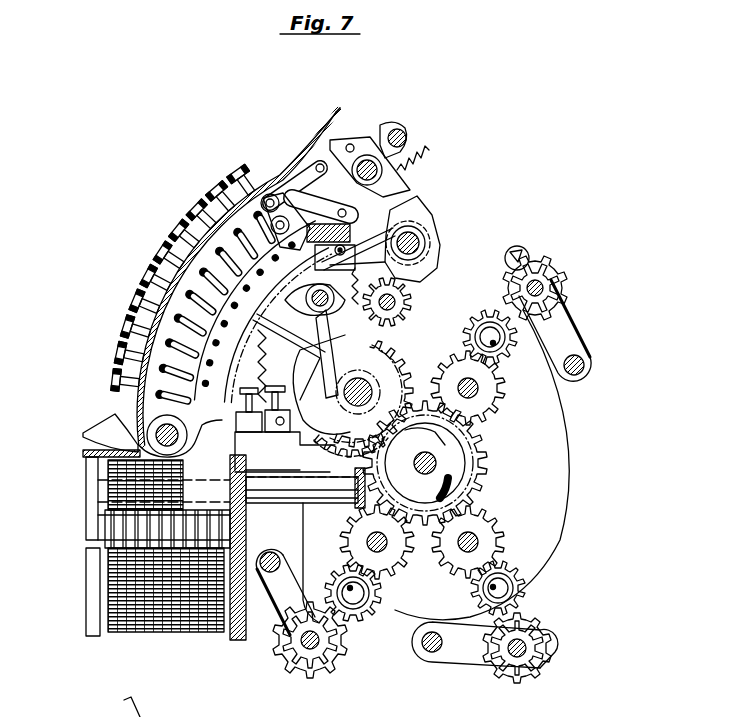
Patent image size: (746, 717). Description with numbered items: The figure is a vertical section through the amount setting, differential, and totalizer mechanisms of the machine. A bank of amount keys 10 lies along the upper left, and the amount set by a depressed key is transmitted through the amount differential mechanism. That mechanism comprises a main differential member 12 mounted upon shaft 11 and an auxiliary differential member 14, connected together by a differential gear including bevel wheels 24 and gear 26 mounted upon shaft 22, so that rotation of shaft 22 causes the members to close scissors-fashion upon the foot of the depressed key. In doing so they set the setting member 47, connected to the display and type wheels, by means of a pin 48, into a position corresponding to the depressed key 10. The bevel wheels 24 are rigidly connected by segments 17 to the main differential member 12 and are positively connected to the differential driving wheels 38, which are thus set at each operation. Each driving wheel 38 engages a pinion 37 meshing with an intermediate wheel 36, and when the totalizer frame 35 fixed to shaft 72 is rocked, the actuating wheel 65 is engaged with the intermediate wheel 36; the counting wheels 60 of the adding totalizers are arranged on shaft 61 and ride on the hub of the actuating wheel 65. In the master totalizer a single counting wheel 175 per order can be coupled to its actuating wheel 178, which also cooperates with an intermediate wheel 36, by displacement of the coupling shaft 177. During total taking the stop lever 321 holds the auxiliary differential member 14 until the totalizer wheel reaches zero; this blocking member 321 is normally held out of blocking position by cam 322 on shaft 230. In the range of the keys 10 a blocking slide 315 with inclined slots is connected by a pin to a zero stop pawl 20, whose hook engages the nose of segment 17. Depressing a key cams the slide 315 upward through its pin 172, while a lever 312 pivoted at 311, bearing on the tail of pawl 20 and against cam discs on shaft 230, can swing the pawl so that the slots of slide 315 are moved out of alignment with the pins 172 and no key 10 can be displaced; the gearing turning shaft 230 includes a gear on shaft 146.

The amount key 10 is at (125, 287).
The pin 172 is at (217, 305).
The zero stop pawl 20 is at (263, 312).
The lever 312 is at (390, 218).
The shaft 230 is at (414, 235).
The cam 322 is at (427, 257).
The pivot 311 is at (385, 264).
The pin 48 is at (315, 311).
The shaft 146 is at (408, 316).
The segment 17 is at (294, 344).
The main differential member 12 is at (370, 347).
The blocking slide 315 is at (190, 375).
The stop lever 321 is at (262, 398).
The shaft 11 is at (352, 402).
The auxiliary differential member 14 is at (298, 427).
The setting member 47 is at (326, 453).
The shaft 22 is at (315, 488).
The counting wheel 60 is at (553, 260).
The shaft 61 is at (514, 288).
The actuating wheel 65 is at (566, 273).
The totalizer frame 35 is at (570, 327).
The intermediate wheel 36 is at (498, 360).
The shaft 72 is at (582, 373).
The pinion 37 is at (503, 402).
The differential driving wheel 38 is at (483, 444).
The differential gear 26 is at (487, 492).
The bevel wheel 24 is at (403, 527).
The actuating wheel 178 is at (290, 617).
The counting wheel 175 is at (343, 650).
The coupling shaft 177 is at (297, 661).